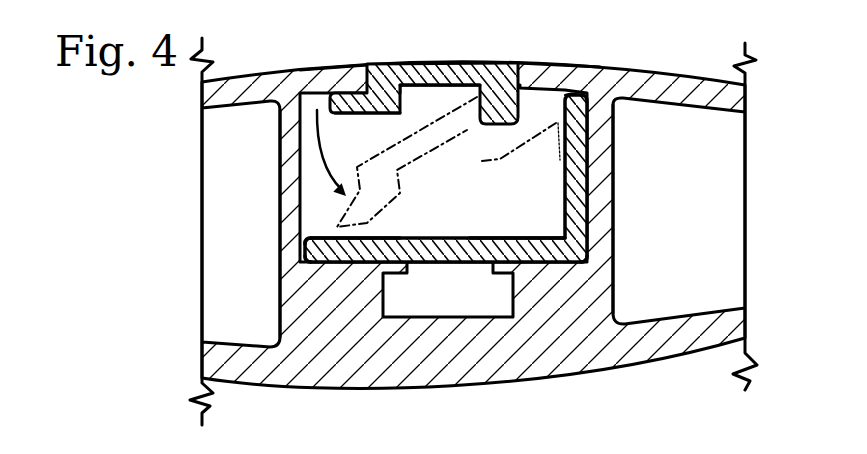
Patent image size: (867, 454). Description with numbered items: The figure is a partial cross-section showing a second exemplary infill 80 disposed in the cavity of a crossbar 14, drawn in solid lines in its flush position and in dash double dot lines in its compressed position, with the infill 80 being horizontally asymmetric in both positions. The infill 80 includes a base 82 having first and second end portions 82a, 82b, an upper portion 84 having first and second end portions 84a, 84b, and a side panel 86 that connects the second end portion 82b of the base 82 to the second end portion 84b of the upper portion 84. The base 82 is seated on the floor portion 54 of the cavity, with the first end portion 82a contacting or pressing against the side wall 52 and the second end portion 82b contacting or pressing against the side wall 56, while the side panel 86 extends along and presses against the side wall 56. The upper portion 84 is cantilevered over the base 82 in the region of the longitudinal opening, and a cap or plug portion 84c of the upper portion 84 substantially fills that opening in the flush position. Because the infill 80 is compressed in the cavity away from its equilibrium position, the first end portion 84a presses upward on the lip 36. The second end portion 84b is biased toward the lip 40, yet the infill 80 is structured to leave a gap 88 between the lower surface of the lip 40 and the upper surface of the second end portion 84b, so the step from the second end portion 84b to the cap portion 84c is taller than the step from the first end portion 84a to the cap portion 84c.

The crossbar 14 is at (244, 73).
The lip 36 is at (357, 63).
The lip 40 is at (533, 67).
The side wall 52 is at (277, 168).
The floor portion 54 is at (345, 258).
The side wall 56 is at (617, 173).
The infill 80 is at (437, 32).
The base 82 is at (475, 233).
The first end portion 82a is at (340, 237).
The second end portion 82b is at (543, 237).
The upper portion 84 is at (400, 63).
The first end portion 84a is at (370, 113).
The second end portion 84b is at (560, 127).
The cap portion 84c is at (428, 63).
The side panel 86 is at (558, 126).
The gap 88 is at (560, 112).